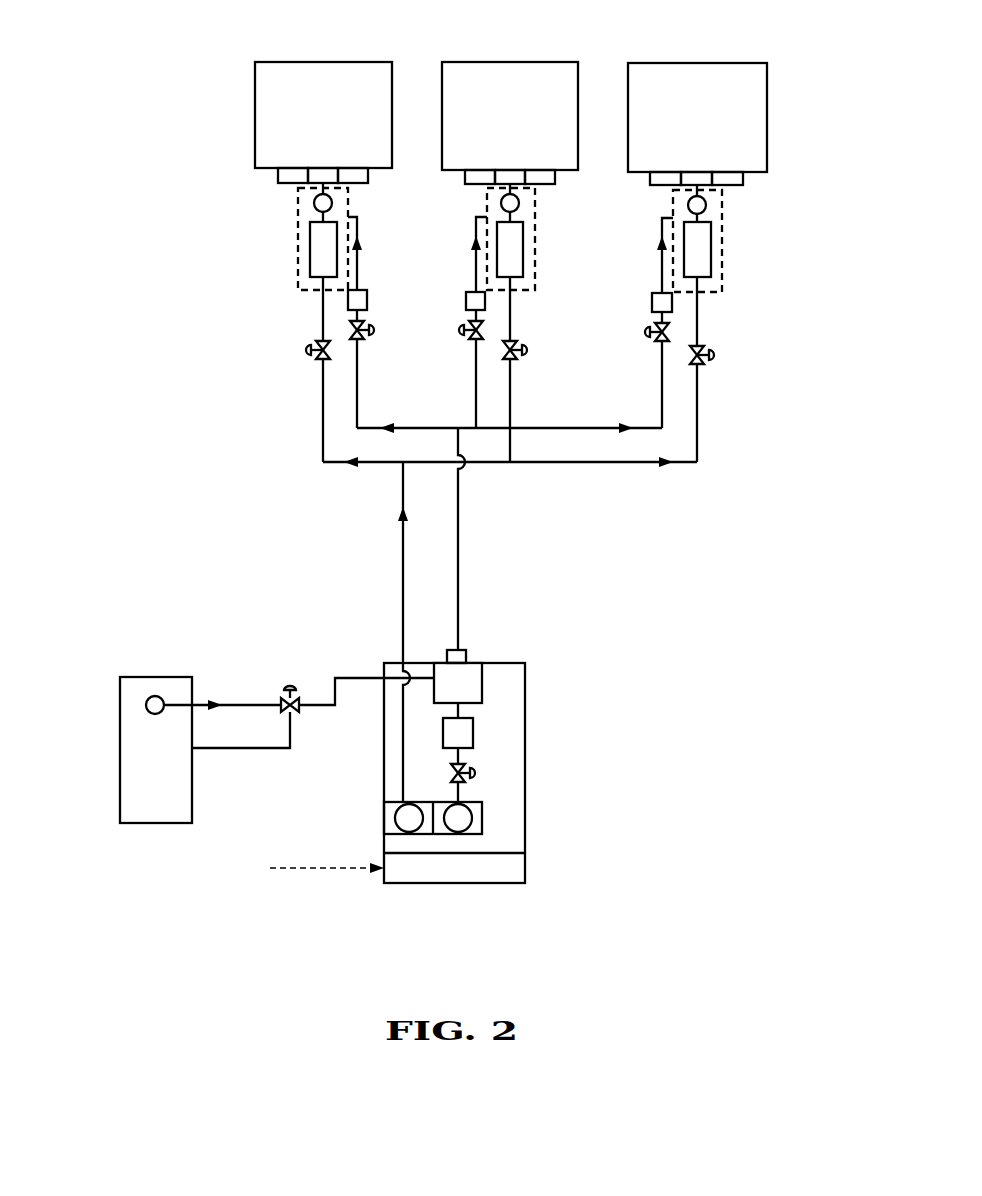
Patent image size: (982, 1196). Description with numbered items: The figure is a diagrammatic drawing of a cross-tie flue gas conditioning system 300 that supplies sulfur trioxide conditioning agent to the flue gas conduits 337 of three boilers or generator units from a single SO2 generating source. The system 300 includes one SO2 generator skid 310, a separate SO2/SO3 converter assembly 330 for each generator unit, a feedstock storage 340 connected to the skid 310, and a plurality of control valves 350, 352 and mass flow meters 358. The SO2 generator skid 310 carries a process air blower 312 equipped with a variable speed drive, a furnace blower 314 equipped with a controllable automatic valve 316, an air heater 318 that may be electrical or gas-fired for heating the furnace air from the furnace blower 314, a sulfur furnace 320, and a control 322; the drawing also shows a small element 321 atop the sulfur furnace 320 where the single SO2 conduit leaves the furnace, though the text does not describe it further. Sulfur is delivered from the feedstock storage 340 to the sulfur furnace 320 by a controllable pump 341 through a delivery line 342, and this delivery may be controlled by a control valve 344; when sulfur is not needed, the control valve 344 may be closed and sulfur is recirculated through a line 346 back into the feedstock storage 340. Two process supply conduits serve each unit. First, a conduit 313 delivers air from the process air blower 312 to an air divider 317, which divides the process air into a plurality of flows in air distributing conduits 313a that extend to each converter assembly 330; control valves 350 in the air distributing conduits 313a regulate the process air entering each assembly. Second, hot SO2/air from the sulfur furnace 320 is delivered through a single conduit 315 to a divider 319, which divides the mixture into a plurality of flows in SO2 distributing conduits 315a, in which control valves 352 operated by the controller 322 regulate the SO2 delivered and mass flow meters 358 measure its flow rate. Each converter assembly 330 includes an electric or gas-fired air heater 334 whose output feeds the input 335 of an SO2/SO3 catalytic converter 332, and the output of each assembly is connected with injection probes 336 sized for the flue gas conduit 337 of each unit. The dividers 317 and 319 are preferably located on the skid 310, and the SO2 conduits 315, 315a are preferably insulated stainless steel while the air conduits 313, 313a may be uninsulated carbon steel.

The system 300 is at (117, 218).
The SO2 generator skid 310 is at (510, 662).
The process air blower 312 is at (361, 818).
The process air conduit 313 is at (384, 556).
The air distributing conduits 313a is at (322, 326).
The furnace blower 314 is at (498, 821).
The SO2 supply conduit 315 is at (478, 513).
The SO2 distributing conduits 315a is at (357, 406).
The controllable automatic valve 316 is at (499, 775).
The air divider 317 is at (403, 463).
The air heater 318 is at (494, 735).
The divider 319 is at (474, 428).
The sulfur furnace 320 is at (496, 686).
The outlet 321 is at (464, 648).
The controller 322 is at (525, 866).
The SO2/SO3 converter assembly 330 is at (506, 218).
The SO2/SO3 catalytic converter 332 is at (296, 198).
The air heater 334 is at (310, 250).
The catalytic converter input 335 is at (313, 208).
The injection probes 336 is at (280, 181).
The flue gas conduit 337 is at (318, 62).
The feedstock storage 340 is at (115, 769).
The controllable pump 341 is at (166, 685).
The delivery line 342 is at (257, 703).
The control valve 344 is at (308, 694).
The recirculation line 346 is at (225, 749).
The control valves 350 is at (300, 366).
The controllable flow control valves 352 is at (450, 351).
The mass flow meters 358 is at (450, 287).